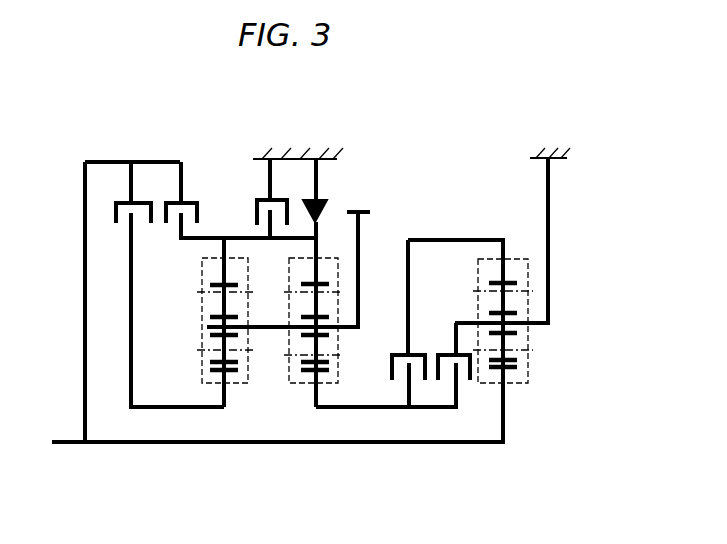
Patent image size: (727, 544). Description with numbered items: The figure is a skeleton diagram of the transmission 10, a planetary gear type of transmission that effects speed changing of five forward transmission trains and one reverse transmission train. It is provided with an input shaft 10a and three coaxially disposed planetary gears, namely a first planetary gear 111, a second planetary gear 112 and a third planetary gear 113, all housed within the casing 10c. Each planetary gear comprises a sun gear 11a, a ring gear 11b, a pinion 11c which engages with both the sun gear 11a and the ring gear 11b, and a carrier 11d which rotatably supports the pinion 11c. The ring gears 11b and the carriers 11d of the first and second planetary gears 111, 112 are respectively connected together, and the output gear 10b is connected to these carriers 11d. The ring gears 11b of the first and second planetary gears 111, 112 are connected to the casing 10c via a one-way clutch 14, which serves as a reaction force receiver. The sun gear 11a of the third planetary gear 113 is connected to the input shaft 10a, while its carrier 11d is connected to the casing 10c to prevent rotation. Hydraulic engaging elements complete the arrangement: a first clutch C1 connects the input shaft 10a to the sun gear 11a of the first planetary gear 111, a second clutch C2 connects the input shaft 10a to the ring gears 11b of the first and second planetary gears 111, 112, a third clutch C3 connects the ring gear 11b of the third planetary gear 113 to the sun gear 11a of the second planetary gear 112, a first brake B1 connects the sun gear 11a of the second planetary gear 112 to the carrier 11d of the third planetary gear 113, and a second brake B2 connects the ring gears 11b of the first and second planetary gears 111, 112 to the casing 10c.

The transmission 10 is at (99, 157).
The input shaft 10a is at (114, 443).
The output gear 10b is at (348, 212).
The casing 10c is at (325, 150).
The sun gear 11a is at (238, 380).
The ring gear 11b is at (211, 284).
The pinion 11c is at (213, 340).
The carrier 11d is at (268, 308).
The first planetary gear 111 is at (250, 352).
The second planetary gear 112 is at (339, 362).
The third planetary gear 113 is at (528, 262).
The one-way clutch 14 is at (327, 203).
The first brake B1 is at (444, 353).
The second brake B2 is at (258, 207).
The first clutch C1 is at (114, 211).
The second clutch C2 is at (196, 211).
The third clutch C3 is at (405, 353).